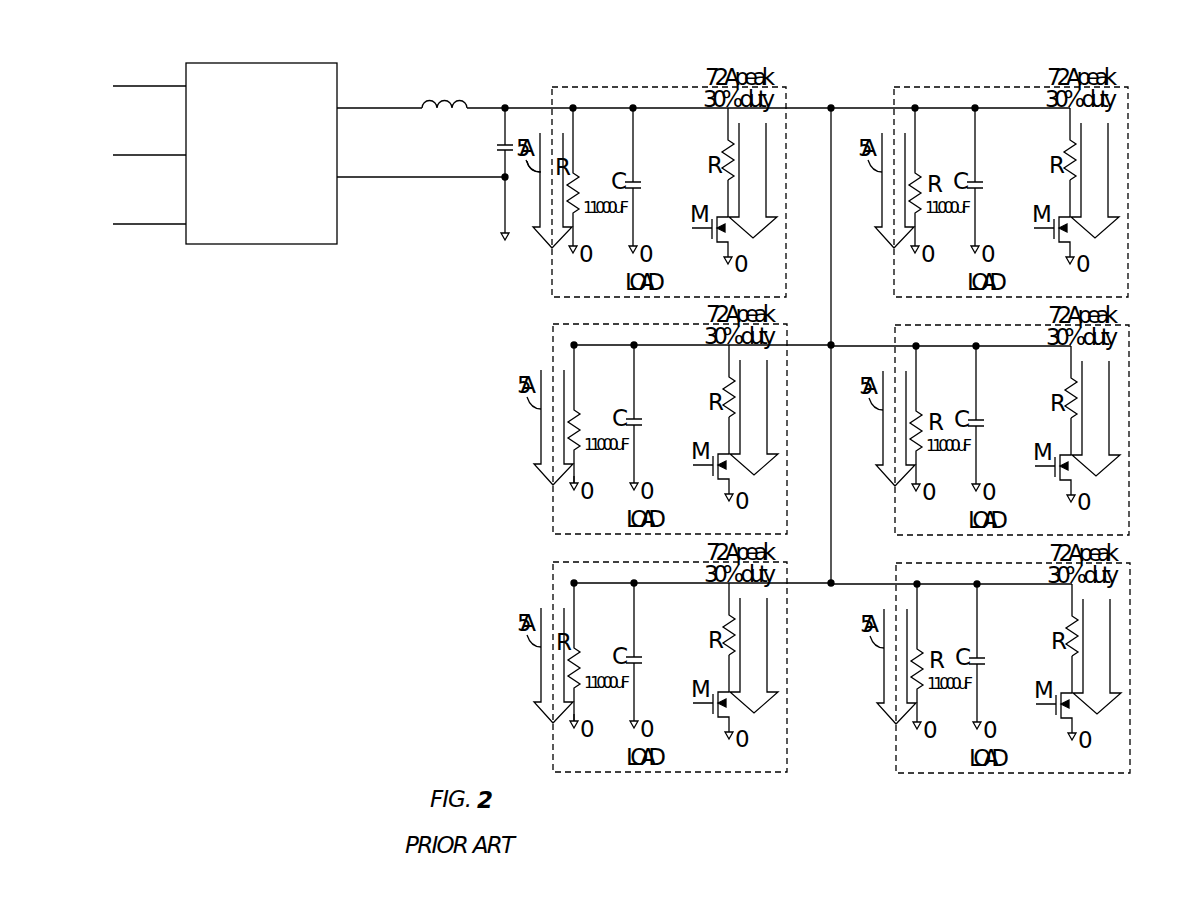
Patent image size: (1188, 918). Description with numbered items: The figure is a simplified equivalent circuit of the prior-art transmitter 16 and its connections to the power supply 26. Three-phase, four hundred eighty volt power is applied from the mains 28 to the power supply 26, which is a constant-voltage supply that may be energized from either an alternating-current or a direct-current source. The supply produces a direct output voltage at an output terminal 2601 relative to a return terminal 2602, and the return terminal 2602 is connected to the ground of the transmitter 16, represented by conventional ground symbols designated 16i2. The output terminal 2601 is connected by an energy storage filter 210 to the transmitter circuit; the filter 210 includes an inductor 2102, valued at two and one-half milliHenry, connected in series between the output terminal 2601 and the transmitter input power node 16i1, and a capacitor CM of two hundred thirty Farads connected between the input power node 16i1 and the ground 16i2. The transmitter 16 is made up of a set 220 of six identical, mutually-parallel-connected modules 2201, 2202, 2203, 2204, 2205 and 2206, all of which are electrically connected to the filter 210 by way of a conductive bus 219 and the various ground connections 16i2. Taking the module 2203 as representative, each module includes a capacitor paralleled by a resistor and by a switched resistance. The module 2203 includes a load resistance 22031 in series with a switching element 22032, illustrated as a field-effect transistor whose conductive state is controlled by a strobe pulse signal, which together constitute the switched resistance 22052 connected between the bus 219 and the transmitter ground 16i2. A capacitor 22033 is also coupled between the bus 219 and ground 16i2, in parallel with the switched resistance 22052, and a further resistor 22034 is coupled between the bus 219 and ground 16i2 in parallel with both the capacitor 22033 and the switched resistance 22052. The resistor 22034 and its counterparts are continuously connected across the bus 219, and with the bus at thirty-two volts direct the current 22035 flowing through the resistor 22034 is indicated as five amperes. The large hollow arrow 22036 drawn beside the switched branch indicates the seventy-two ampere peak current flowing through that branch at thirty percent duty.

The mains 28 is at (151, 185).
The power supply 26 is at (275, 244).
The output terminal 2601 is at (337, 110).
The return terminal 2602 is at (337, 179).
The energy storage filter 210 is at (479, 115).
The inductor 2102 is at (456, 93).
The transmitter input power node 16i1 is at (506, 105).
The transmitter ground 16i2 is at (507, 243).
The set of modules 220 is at (866, 67).
The conductive bus 219 is at (832, 249).
The transmitter 16 is at (856, 788).
The module 2201 is at (610, 87).
The module 2202 is at (953, 87).
The module 2203 is at (653, 426).
The module 2204 is at (1132, 481).
The module 2205 is at (717, 772).
The module 2206 is at (1050, 772).
The load resistance 22031 is at (692, 381).
The switching element 22032 is at (700, 455).
The capacitor 22033 is at (676, 463).
The resistor 22034 is at (592, 423).
The current 22035 is at (517, 427).
The 72A peak current arrow 22036 is at (784, 417).
The switched resistance 22052 is at (799, 505).